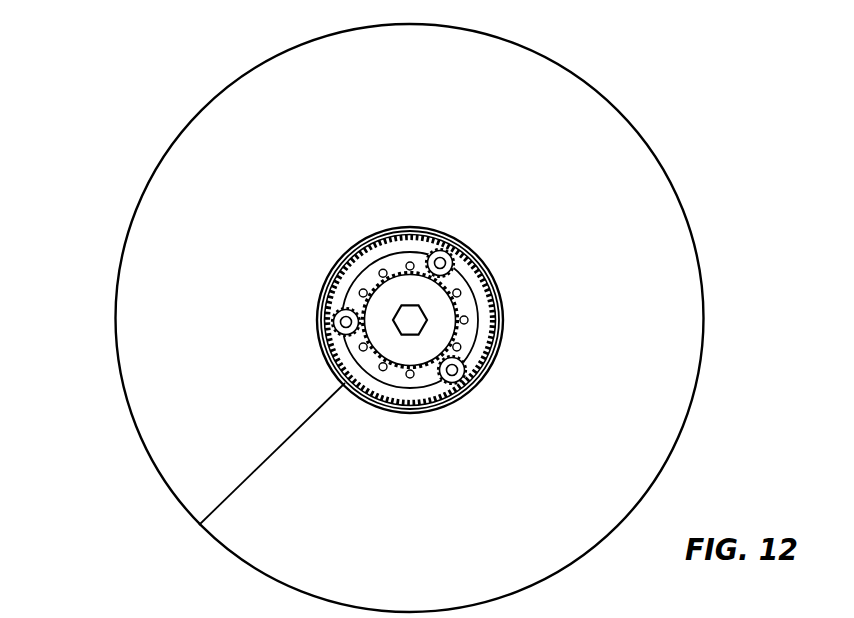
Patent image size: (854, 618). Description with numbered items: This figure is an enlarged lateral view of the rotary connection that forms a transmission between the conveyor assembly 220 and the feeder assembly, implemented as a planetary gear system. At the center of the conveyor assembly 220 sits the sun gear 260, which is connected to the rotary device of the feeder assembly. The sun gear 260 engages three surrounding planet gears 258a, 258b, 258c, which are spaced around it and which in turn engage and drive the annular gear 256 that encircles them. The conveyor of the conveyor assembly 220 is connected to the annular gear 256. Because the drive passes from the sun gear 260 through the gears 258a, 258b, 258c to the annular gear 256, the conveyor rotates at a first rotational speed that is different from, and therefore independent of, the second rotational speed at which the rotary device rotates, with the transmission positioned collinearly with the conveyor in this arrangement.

The conveyor assembly 220 is at (606, 70).
The annular gear 256 is at (494, 326).
The sun gear 260 is at (460, 310).
The gear 258a is at (456, 259).
The gear 258b is at (336, 292).
The gear 258c is at (464, 362).